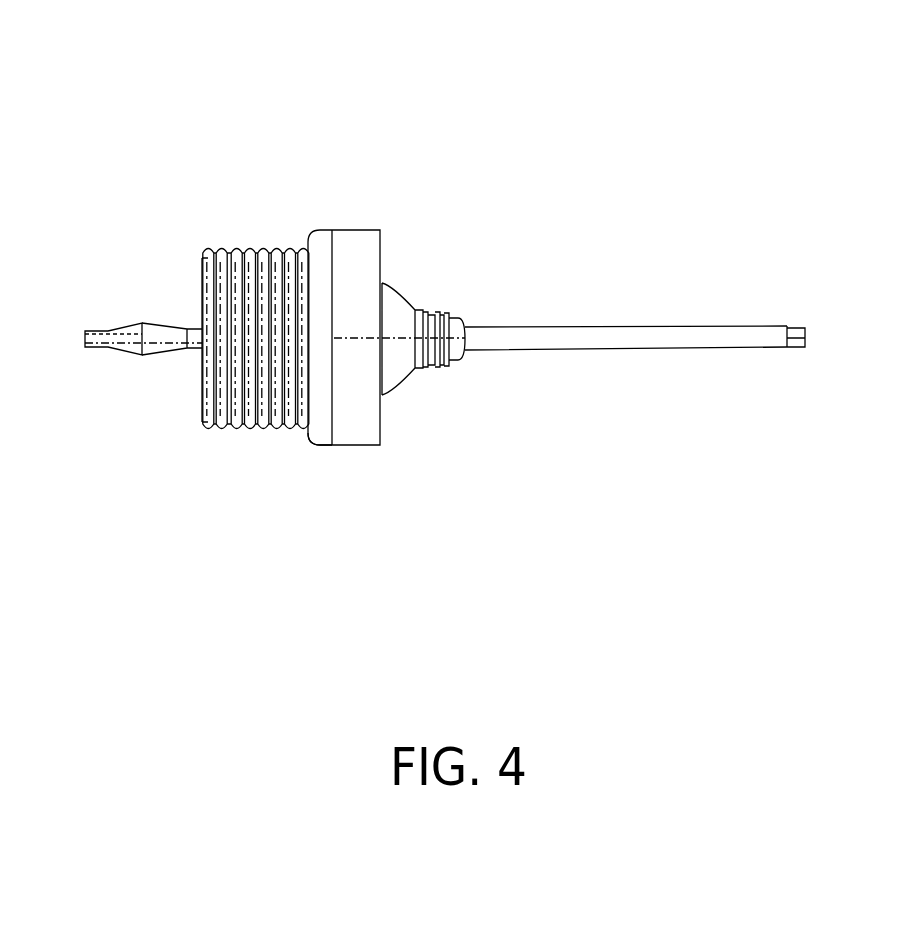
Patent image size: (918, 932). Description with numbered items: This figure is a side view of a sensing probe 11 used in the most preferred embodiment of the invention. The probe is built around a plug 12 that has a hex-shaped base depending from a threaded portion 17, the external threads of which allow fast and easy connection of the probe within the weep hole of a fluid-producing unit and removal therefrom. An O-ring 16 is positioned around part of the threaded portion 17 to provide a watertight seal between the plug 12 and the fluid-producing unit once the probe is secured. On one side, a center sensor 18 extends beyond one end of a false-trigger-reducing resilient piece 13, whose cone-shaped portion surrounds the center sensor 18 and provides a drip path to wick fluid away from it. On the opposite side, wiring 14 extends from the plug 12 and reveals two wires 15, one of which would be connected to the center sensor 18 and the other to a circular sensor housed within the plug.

The sensing probe 11 is at (147, 109).
The plug 12 is at (372, 231).
The resilient piece 13 is at (154, 358).
The wiring 14 is at (752, 314).
The wires 15 is at (786, 350).
The O-ring 16 is at (331, 441).
The threaded portion 17 is at (271, 418).
The center sensor 18 is at (82, 318).